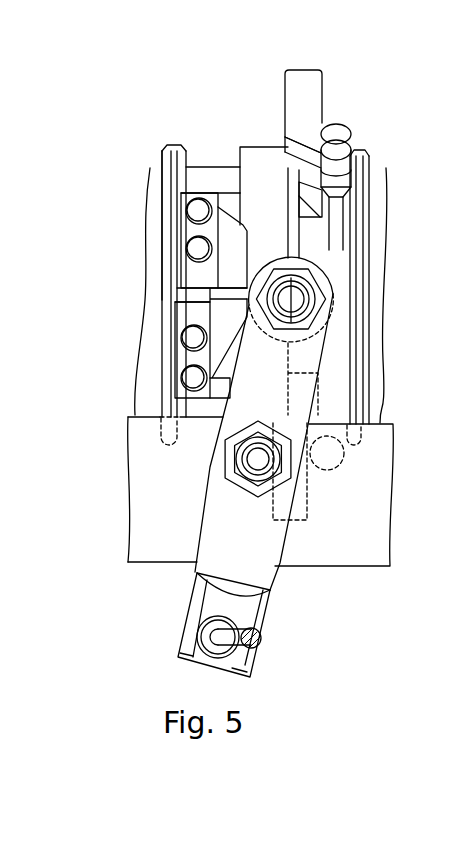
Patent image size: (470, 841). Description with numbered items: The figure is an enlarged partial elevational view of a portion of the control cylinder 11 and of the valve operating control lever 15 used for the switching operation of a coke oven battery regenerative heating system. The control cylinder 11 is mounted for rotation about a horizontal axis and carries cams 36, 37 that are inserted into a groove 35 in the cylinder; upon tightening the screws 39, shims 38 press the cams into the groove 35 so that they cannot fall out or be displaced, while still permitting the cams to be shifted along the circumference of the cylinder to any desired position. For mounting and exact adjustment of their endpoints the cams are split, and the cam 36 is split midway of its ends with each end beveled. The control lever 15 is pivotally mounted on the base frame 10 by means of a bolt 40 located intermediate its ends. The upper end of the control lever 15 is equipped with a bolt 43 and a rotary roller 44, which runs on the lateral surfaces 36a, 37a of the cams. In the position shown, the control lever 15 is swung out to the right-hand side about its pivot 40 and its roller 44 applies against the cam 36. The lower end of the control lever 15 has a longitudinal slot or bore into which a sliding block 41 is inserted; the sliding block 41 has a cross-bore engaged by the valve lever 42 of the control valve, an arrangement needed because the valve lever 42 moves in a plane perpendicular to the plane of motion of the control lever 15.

The base frame 10 is at (172, 538).
The control cylinder 11 is at (253, 160).
The control lever 15 is at (262, 548).
The groove 35 is at (330, 258).
The cam 36 is at (220, 317).
The lateral surface 36a is at (250, 242).
The cam 37 is at (315, 95).
The lateral surface 37a is at (286, 137).
The shim 38 is at (345, 177).
The screw 39 is at (340, 147).
The bolt 40 is at (260, 459).
The sliding block 41 is at (232, 605).
The valve lever 42 is at (260, 642).
The bolt 43 is at (300, 300).
The rotary roller 44 is at (335, 300).